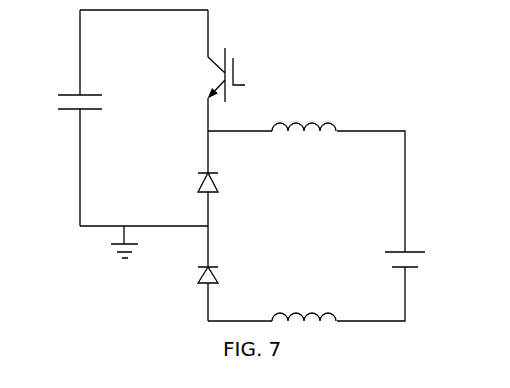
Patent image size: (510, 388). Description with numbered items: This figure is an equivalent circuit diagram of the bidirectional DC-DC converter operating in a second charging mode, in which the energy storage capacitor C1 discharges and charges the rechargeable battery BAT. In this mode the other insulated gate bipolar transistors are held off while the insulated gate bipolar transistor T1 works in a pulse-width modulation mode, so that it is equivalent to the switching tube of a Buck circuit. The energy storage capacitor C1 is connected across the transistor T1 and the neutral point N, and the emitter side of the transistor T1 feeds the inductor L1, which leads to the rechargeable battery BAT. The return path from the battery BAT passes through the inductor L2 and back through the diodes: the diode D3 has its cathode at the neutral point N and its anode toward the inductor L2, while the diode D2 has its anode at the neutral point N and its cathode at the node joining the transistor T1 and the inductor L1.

The energy storage capacitor C1 is at (65, 100).
The insulated gate bipolar transistor T1 is at (235, 56).
The inductor L1 is at (304, 113).
The inductor L2 is at (304, 302).
The diode D2 is at (194, 176).
The diode D3 is at (194, 269).
The rechargeable battery BAT is at (427, 258).
The neutral point N is at (124, 256).